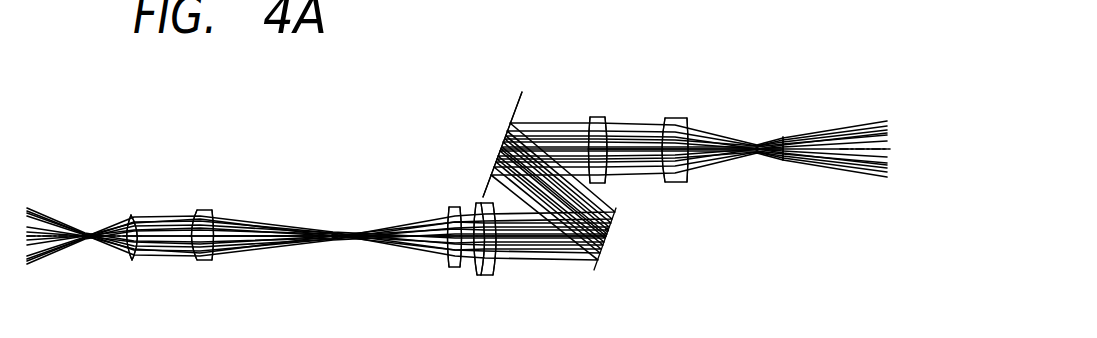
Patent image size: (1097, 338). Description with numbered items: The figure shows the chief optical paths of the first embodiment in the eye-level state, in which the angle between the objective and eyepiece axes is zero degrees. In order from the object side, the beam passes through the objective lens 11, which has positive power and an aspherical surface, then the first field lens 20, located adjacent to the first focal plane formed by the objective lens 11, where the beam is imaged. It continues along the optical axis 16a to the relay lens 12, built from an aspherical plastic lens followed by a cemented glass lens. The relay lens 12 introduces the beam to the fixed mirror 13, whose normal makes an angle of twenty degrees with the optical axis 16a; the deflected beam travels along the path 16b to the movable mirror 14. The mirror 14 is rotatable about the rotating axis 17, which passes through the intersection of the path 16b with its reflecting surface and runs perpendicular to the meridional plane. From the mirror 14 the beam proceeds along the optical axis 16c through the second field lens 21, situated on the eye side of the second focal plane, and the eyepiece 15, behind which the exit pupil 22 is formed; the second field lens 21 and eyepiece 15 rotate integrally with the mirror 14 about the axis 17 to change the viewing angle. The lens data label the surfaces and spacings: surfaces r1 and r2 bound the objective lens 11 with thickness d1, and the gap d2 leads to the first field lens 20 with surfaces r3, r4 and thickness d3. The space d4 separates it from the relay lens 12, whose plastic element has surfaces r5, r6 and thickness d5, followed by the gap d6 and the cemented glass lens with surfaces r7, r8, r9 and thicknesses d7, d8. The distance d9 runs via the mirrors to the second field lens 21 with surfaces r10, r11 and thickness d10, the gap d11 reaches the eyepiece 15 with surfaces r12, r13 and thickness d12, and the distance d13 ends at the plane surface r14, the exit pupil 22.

The objective lens 11 is at (131, 213).
The first field lens 20 is at (201, 210).
The relay lens 12 is at (500, 279).
The fixed mirror 13 is at (600, 263).
The movable mirror 14 is at (516, 97).
The rotating axis 17 is at (498, 148).
The second field lens 21 is at (596, 116).
The eyepiece 15 is at (673, 117).
The exit pupil 22 is at (784, 137).
The optical axis of components before the mirrors 16a is at (339, 248).
The optical path between the mirrors 16b is at (612, 209).
The optical axis of components after the mirrors 16c is at (758, 147).
The radius of curvature of first lens surface r1 is at (119, 222).
The radius of curvature of second lens surface r2 is at (140, 222).
The radius of curvature of third lens surface r3 is at (189, 218).
The radius of curvature of fourth lens surface r4 is at (215, 219).
The radius of curvature of fifth lens surface r5 is at (447, 212).
The radius of curvature of sixth lens surface r6 is at (460, 209).
The radius of curvature of seventh lens surface r7 is at (471, 207).
The radius of curvature of eighth lens surface r8 is at (483, 207).
The radius of curvature of ninth lens surface r9 is at (491, 207).
The radius of curvature of tenth lens surface r10 is at (588, 124).
The radius of curvature of eleventh lens surface r11 is at (607, 122).
The radius of curvature of twelfth lens surface r12 is at (664, 124).
The radius of curvature of thirteenth lens surface r13 is at (689, 125).
The exit pupil surface r14 is at (790, 150).
The space between first and second lens surfaces d1 is at (133, 258).
The space between second and third lens surfaces d2 is at (161, 256).
The space between third and fourth lens surfaces d3 is at (201, 260).
The space between fourth and fifth lens surfaces d4 is at (268, 242).
The space between fifth and sixth lens surfaces d5 is at (436, 250).
The space between sixth and seventh lens surfaces d6 is at (450, 262).
The space between seventh and eighth lens surfaces d7 is at (490, 262).
The space between eighth and ninth lens surfaces d8 is at (537, 250).
The space between ninth and tenth lens surfaces d9 is at (567, 262).
The space between tenth and eleventh lens surfaces d10 is at (648, 186).
The space between eleventh and twelfth lens surfaces d11 is at (693, 178).
The space between twelfth and thirteenth lens surfaces d12 is at (724, 152).
The space between thirteenth and fourteenth surfaces d13 is at (752, 162).